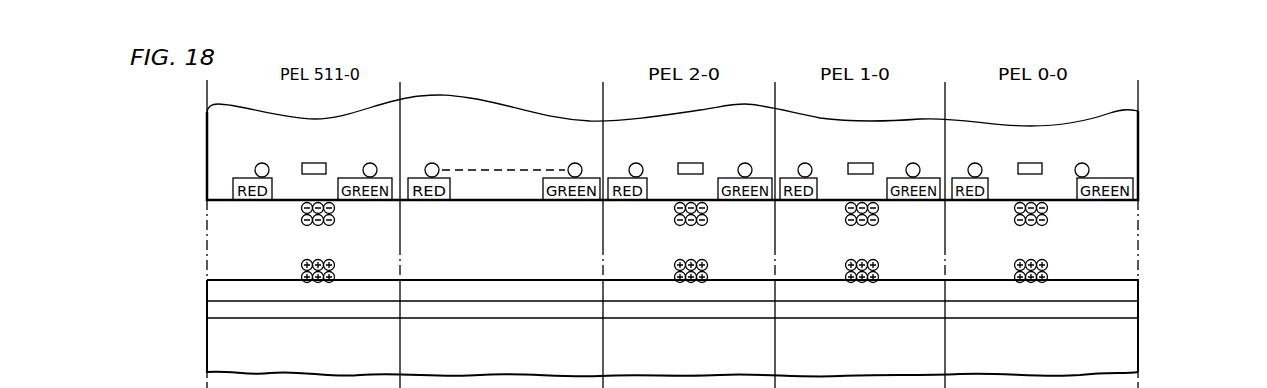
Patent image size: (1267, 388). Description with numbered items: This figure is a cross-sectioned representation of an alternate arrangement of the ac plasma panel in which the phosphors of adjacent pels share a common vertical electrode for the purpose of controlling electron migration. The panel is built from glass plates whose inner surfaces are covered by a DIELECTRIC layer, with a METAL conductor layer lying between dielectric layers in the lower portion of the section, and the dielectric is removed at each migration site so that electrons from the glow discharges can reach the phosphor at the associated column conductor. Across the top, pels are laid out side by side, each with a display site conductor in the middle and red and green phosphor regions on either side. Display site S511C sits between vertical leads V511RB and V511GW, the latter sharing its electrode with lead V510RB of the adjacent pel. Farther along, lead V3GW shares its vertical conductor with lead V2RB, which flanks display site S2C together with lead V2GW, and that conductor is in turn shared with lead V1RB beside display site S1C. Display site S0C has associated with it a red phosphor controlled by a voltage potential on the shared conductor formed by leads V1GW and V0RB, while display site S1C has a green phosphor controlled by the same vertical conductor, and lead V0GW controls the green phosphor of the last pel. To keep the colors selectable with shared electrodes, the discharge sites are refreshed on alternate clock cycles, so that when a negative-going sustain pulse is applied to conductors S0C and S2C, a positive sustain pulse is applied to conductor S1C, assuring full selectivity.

The vertical conductor lead V511RB is at (264, 163).
The display site conductor S511C is at (316, 153).
The vertical conductor lead V511GW is at (366, 164).
The vertical conductor lead V510RB is at (449, 146).
The vertical conductor lead V3GW is at (573, 163).
The vertical conductor lead V2RB is at (640, 146).
The display site conductor S2C is at (682, 163).
The vertical conductor lead V2GW is at (744, 163).
The vertical conductor lead V1RB is at (809, 146).
The display site conductor S1C is at (852, 163).
The vertical conductor lead V1GW is at (912, 163).
The vertical conductor lead V0RB is at (980, 146).
The display site conductor S0C is at (1044, 147).
The vertical conductor lead V0GW is at (1084, 163).
The dielectric layer DIELECTRIC is at (1139, 180).
The metal layer METAL is at (1131, 317).